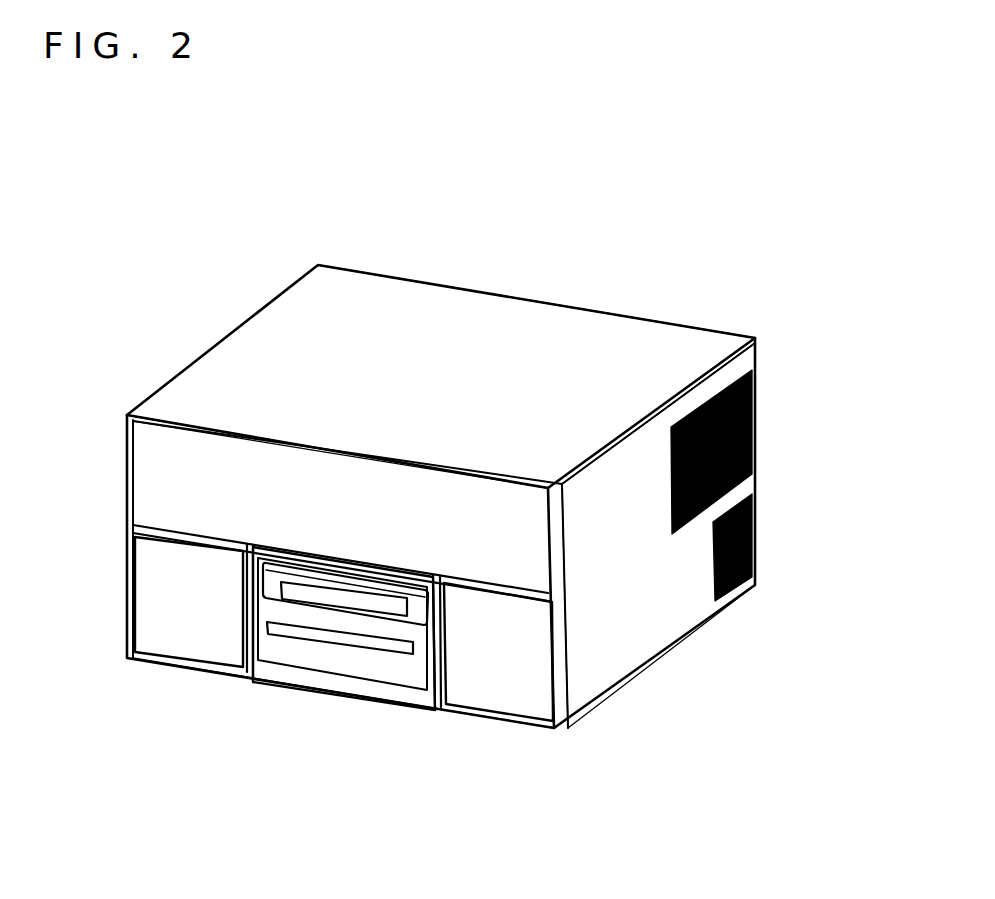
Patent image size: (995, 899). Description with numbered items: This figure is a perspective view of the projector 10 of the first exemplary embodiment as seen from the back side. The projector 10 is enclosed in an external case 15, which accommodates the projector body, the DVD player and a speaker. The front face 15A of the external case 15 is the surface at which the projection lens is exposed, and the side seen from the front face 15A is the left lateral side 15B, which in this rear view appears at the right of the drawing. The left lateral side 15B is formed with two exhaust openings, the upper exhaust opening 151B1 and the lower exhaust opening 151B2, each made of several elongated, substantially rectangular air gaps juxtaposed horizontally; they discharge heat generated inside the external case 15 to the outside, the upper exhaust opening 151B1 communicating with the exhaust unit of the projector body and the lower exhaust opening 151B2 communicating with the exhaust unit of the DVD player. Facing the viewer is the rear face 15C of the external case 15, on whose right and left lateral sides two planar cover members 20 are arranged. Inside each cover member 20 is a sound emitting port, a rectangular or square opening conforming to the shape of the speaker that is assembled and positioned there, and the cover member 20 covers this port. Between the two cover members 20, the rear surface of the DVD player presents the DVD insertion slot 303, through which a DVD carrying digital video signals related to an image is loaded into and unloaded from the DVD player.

The projector 10 is at (540, 256).
The external case 15 is at (238, 355).
The front face 15A is at (726, 300).
The left lateral side 15B is at (655, 637).
The rear face 15C is at (150, 481).
The upper exhaust opening 151B1 is at (758, 423).
The lower exhaust opening 151B2 is at (760, 541).
The cover member 20 is at (155, 604).
The DVD insertion slot 303 is at (335, 618).